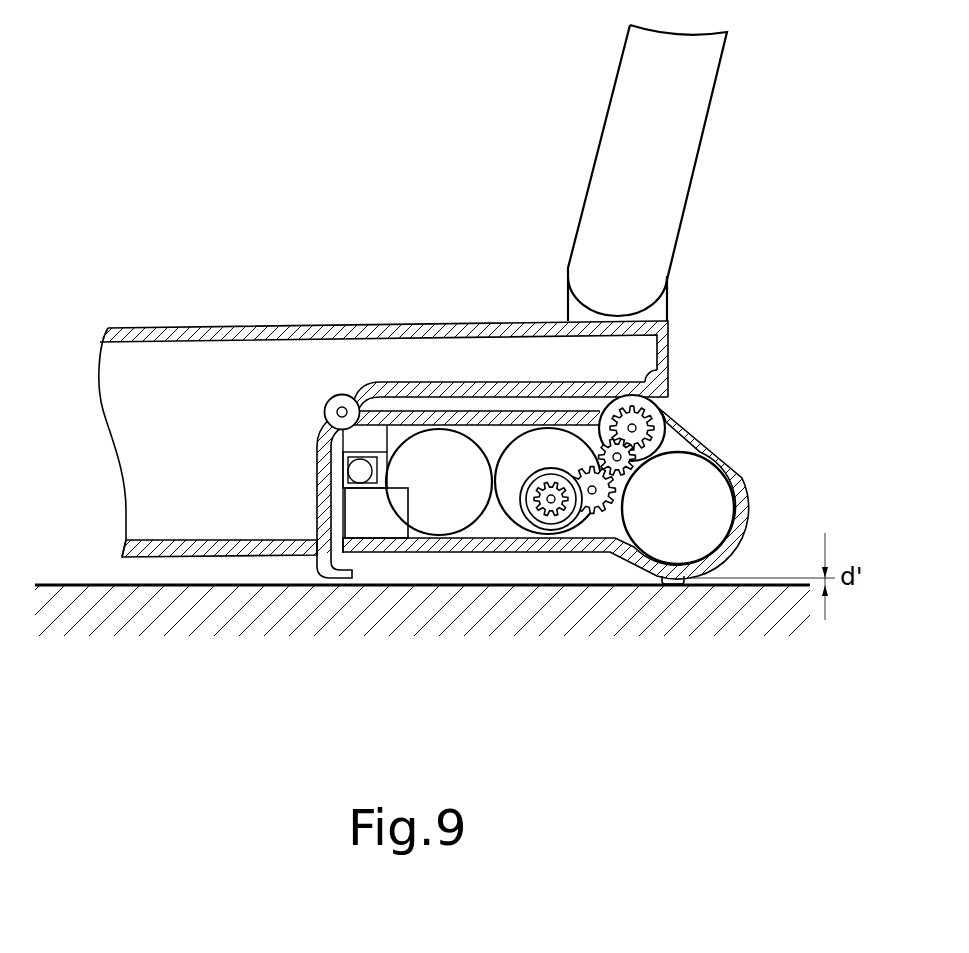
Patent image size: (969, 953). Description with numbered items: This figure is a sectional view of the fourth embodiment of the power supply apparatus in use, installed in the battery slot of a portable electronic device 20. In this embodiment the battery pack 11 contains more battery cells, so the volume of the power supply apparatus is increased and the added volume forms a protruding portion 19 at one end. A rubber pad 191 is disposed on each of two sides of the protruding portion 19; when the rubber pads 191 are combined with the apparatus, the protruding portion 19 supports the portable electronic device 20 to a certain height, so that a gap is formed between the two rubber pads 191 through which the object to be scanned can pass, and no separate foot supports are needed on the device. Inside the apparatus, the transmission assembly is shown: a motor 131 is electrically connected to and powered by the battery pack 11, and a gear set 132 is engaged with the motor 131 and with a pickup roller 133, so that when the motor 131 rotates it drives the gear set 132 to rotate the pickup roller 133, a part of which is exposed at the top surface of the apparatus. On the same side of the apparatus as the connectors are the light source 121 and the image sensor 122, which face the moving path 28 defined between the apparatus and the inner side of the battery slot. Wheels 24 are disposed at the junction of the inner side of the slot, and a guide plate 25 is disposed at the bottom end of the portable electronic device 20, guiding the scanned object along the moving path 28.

The portable electronic device 20 is at (200, 316).
The wheels 24 is at (328, 401).
The light source 121 is at (340, 472).
The image sensor 122 is at (360, 520).
The moving path 28 is at (475, 402).
The motor 131 is at (545, 470).
The pickup roller 133 is at (653, 412).
The gear set 132 is at (650, 470).
The protruding portion 19 is at (740, 493).
The battery pack 11 is at (712, 508).
The guide plate 25 is at (331, 581).
The rubber pad 191 is at (672, 585).